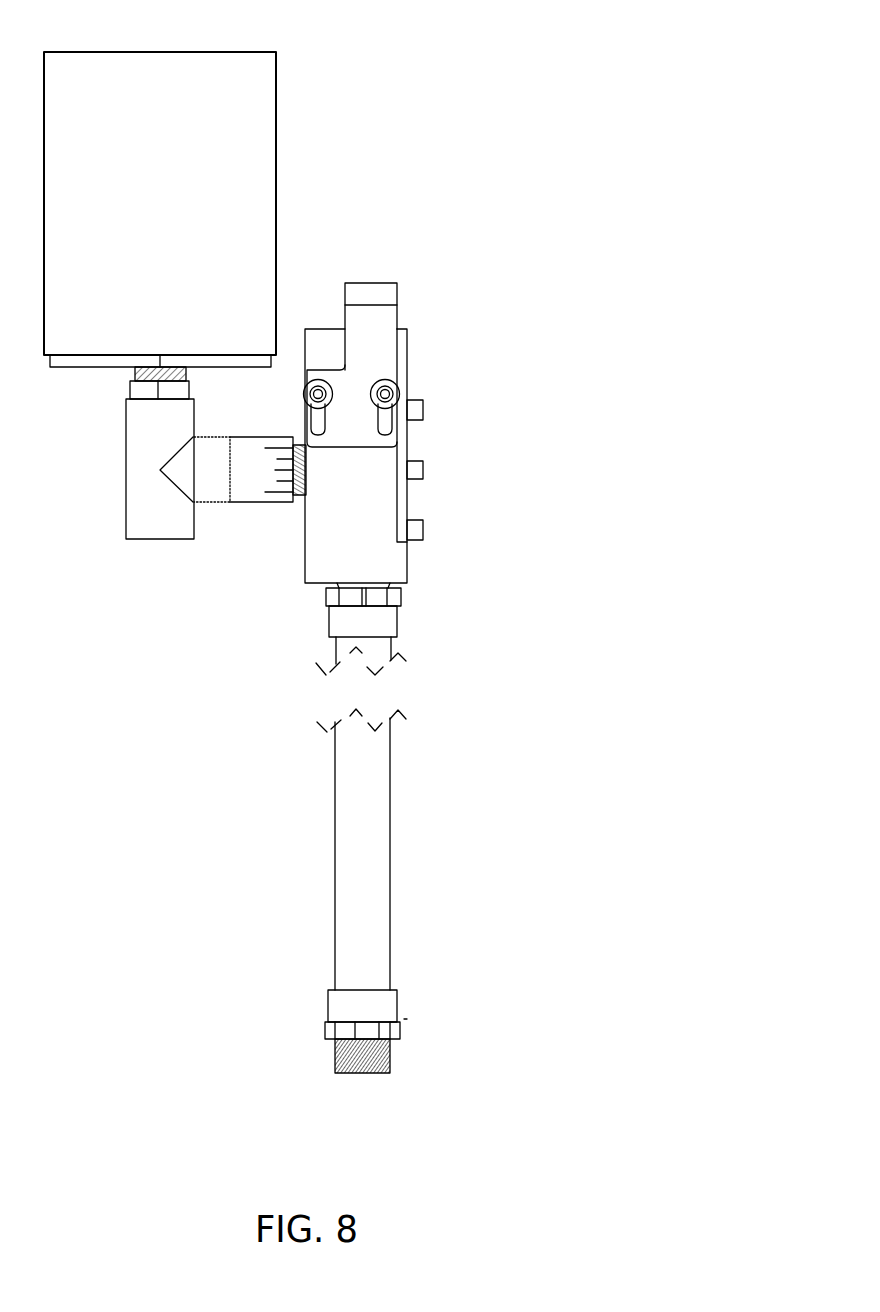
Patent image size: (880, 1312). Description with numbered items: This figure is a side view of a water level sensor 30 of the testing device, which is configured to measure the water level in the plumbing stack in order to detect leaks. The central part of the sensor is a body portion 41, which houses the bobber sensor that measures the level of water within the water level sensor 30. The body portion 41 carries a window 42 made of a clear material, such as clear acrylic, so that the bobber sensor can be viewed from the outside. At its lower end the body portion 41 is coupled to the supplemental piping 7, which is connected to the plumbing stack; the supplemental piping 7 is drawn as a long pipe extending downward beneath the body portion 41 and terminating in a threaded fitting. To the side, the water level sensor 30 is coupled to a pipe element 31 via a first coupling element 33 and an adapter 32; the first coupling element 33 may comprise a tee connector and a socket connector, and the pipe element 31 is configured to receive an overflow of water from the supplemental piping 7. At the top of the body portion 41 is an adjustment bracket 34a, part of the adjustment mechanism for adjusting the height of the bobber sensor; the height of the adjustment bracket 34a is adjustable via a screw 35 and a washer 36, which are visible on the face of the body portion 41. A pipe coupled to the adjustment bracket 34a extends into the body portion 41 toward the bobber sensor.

The water level sensor 30 is at (524, 92).
The pipe element 31 is at (262, 119).
The adapter 32 is at (63, 368).
The first coupling element 33 is at (259, 484).
The adjustment bracket 34a is at (373, 281).
The screw 35 is at (397, 394).
The washer 36 is at (393, 381).
The body portion 41 is at (415, 568).
The window 42 is at (416, 502).
The supplemental piping 7 is at (347, 810).